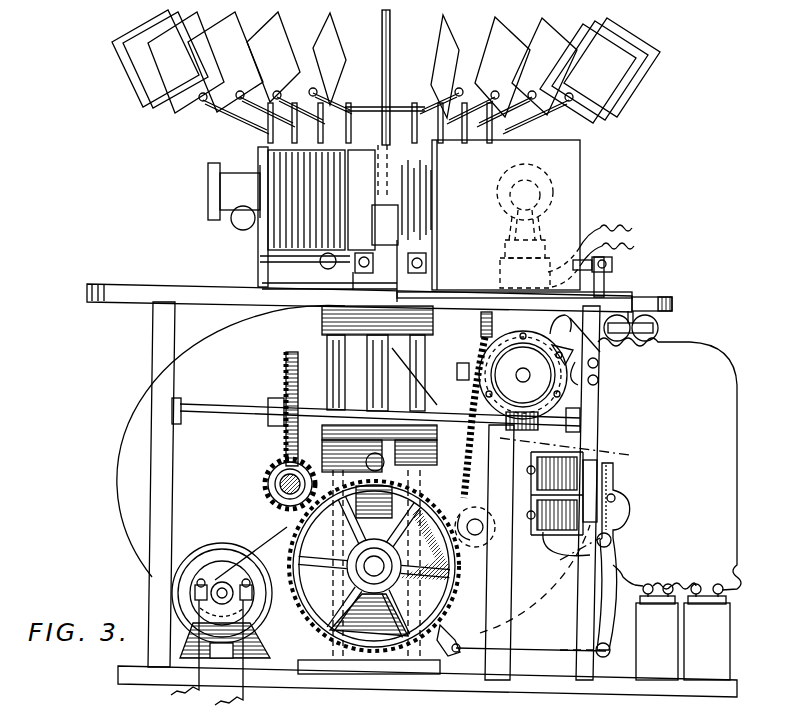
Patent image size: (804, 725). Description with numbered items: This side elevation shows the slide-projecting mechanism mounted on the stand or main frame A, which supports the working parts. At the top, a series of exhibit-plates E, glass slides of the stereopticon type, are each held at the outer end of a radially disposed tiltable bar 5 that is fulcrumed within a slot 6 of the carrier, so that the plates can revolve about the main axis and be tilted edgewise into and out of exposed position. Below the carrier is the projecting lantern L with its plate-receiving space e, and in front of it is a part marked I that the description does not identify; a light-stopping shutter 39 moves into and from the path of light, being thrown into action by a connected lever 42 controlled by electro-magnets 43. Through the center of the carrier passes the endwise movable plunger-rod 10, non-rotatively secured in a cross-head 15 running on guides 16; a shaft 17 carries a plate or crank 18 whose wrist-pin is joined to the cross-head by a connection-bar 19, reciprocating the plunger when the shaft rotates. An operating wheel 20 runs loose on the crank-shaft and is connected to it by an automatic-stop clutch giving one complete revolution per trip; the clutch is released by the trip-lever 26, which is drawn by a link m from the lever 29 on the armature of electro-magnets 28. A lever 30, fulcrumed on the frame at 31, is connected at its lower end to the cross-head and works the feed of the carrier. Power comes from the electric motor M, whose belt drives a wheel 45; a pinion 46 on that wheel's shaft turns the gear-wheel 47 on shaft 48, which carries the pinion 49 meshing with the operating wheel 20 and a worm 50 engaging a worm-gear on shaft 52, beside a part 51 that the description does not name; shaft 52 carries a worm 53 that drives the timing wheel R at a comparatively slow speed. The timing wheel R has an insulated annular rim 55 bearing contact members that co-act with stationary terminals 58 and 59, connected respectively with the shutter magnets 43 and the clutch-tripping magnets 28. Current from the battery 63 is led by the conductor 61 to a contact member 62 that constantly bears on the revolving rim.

The stand or main frame A is at (133, 293).
The exhibit-plate E is at (178, 84).
The tiltable bar 5 is at (274, 118).
The slot 6 is at (300, 140).
The lens I is at (240, 193).
The plate-receiving space e is at (385, 225).
The light-stopping shutter 39 is at (405, 200).
The lantern L is at (533, 215).
The contact member 62 is at (584, 302).
The connected lever 42 is at (640, 302).
The electro-magnets 43 is at (656, 330).
The conductor 61 is at (737, 474).
The timing wheel R is at (539, 367).
The worm 53 is at (522, 431).
The insulated annular disk or rim 55 is at (481, 328).
The lever 30 is at (476, 417).
The fulcrum 31 is at (457, 371).
The guides 16 is at (327, 356).
The plunger-rod 10 is at (375, 372).
The cross-head 15 is at (379, 448).
The shaft 52 is at (252, 408).
The rack bar 51 is at (286, 376).
The pinion 49 is at (268, 486).
The shaft 48 is at (282, 492).
The worm 50 is at (278, 478).
The operating wheel 20 is at (366, 650).
The plate or crank 18 is at (374, 566).
The shaft 17 is at (374, 566).
The connection-bar 19 is at (374, 502).
The pinion 46 is at (495, 540).
The wheel 45 is at (548, 607).
The electro-magnets 28 is at (600, 462).
The lever 29 is at (613, 553).
The stationary terminal 58 is at (598, 365).
The stationary terminal 59 is at (598, 383).
The electric-battery 63 is at (671, 622).
The link m is at (531, 660).
The trip-lever 26 is at (455, 655).
The electric motor M is at (225, 562).
The gear-wheel 47 is at (122, 470).